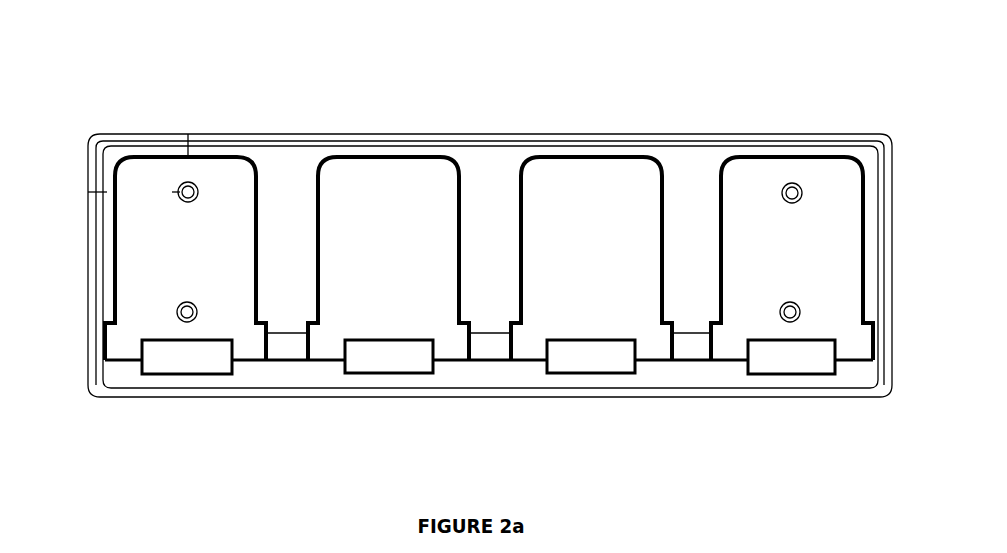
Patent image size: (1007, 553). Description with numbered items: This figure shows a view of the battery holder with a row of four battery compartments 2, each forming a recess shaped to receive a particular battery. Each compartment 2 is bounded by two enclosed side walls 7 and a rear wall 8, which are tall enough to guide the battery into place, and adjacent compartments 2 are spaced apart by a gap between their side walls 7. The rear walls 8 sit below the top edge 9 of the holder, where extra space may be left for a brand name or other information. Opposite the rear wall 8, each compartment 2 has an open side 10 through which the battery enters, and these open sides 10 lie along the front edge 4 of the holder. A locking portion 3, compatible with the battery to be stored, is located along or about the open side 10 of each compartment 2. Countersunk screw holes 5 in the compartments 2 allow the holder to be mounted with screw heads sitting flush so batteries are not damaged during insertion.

The battery compartment 2 is at (487, 261).
The locking portion 3 is at (178, 360).
The front edge 4 is at (350, 397).
The screw hole 5 is at (790, 183).
The side wall 7 is at (865, 295).
The rear wall 8 is at (803, 190).
The top edge 9 is at (547, 135).
The open side 10 is at (733, 360).